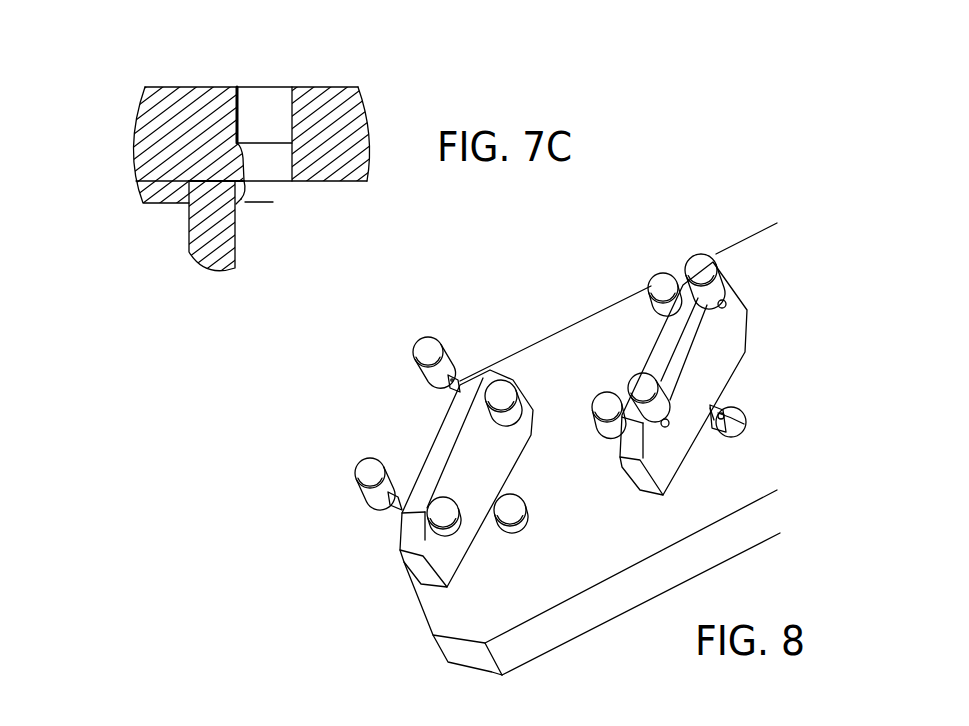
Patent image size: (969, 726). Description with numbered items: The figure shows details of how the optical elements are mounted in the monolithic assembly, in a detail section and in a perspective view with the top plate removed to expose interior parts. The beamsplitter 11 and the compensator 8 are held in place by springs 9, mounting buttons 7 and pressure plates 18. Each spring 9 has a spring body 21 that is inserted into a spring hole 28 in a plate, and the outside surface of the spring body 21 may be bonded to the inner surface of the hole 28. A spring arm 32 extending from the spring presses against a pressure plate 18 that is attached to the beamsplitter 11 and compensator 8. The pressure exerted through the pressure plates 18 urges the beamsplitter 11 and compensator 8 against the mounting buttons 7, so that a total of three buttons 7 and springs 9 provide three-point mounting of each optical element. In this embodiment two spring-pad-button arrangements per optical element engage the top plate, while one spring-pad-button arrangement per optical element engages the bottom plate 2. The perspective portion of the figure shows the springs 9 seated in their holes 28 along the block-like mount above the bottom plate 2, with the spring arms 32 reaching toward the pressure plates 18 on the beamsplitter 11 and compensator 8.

In FIG. 8, the bottom plate 2 is at (463, 612).
In FIG. 7C, the mounting button 7 is at (143, 200).
In FIG. 8, the compensator 8 is at (728, 343).
In FIG. 8, the spring 9 is at (414, 443).
In FIG. 7C, the beamsplitter 11 is at (202, 253).
In FIG. 8, the beamsplitter 11 is at (508, 450).
In FIG. 7C, the pressure plate 18 is at (240, 203).
In FIG. 8, the pressure plate 18 is at (712, 410).
In FIG. 7C, the spring body 21 is at (248, 105).
In FIG. 8, the spring body 21 is at (430, 372).
In FIG. 8, the spring hole 28 is at (750, 418).
In FIG. 7C, the spring arm 32 is at (244, 184).
In FIG. 8, the spring arm 32 is at (450, 387).